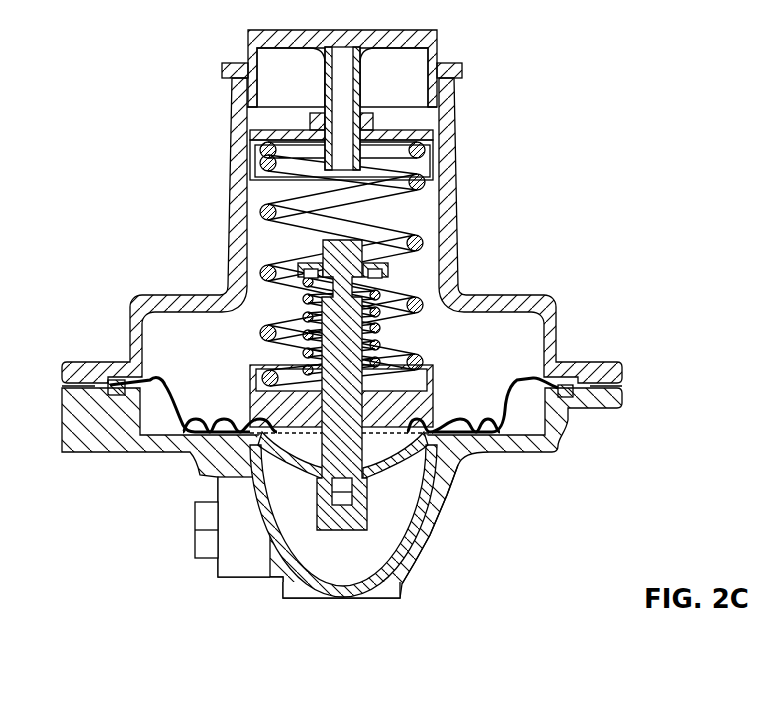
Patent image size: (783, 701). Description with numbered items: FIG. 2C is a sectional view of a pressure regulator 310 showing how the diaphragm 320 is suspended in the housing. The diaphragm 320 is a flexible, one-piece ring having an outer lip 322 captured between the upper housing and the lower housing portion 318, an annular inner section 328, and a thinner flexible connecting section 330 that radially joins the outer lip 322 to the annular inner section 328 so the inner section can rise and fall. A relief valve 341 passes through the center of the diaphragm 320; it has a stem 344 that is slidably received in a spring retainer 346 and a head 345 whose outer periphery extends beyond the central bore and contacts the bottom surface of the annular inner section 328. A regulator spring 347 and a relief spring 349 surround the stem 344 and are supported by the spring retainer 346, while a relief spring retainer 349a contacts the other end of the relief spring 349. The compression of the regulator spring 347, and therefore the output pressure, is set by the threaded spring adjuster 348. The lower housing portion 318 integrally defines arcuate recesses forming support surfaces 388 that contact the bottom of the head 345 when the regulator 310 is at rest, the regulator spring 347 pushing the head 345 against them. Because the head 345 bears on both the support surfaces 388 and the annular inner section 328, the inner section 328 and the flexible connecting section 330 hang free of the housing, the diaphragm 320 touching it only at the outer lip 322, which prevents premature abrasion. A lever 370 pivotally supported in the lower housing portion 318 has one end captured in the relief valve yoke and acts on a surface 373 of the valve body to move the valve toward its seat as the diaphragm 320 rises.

The pressure regulator 310 is at (558, 100).
The lower housing portion 318 is at (563, 437).
The diaphragm 320 is at (500, 372).
The outer lip 322 is at (582, 360).
The annular inner section 328 is at (193, 437).
The flexible connecting section 330 is at (157, 380).
The relief valve 341 is at (425, 470).
The stem 344 is at (348, 240).
The head 345 is at (412, 467).
The spring retainer 346 is at (418, 407).
The regulator spring 347 is at (262, 206).
The threaded spring adjuster 348 is at (252, 141).
The relief spring 349 is at (383, 292).
The relief spring retainer 349a is at (302, 264).
The lever 370 is at (393, 480).
The surface 373 is at (356, 498).
The support surfaces 388 is at (263, 447).